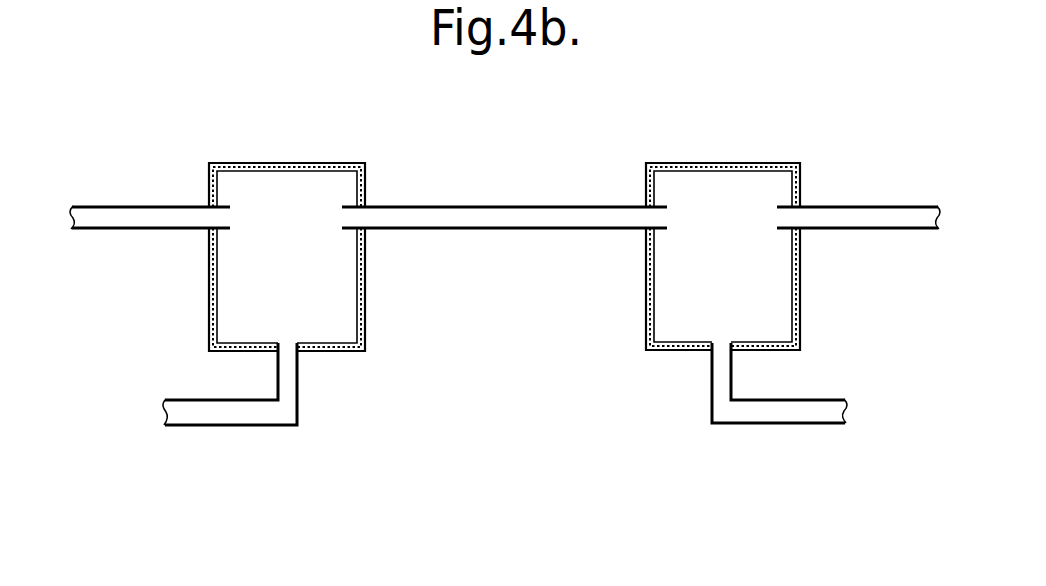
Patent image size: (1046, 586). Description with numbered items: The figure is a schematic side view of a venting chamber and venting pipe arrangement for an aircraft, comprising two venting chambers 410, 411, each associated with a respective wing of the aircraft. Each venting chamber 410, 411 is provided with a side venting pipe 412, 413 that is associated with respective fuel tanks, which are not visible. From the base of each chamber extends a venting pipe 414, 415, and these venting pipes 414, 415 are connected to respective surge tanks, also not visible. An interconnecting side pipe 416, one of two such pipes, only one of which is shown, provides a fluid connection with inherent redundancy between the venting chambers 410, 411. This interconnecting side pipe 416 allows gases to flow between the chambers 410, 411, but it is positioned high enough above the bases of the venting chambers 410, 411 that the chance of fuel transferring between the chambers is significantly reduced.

The venting chamber 410 is at (292, 163).
The venting chamber 411 is at (730, 163).
The side venting pipe 412 is at (113, 217).
The side venting pipe 413 is at (865, 217).
The venting pipe 414 is at (235, 410).
The venting pipe 415 is at (793, 410).
The interconnecting side pipe 416 is at (550, 215).